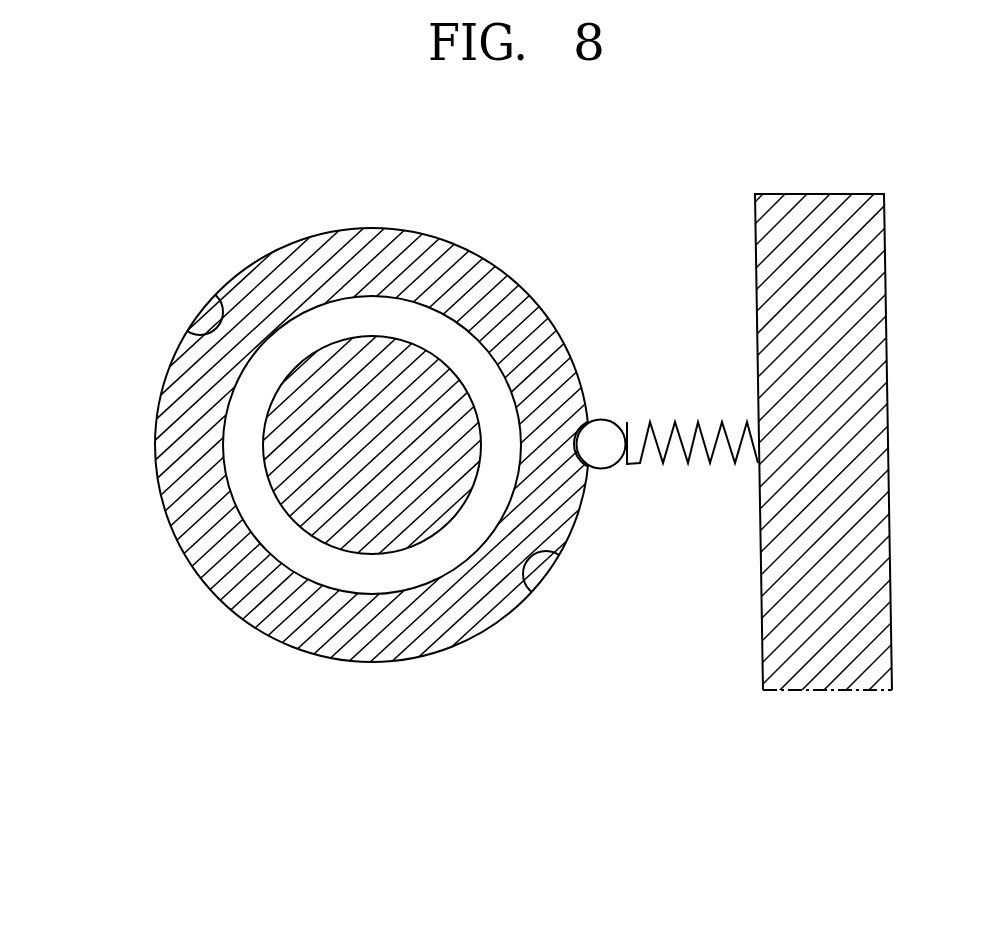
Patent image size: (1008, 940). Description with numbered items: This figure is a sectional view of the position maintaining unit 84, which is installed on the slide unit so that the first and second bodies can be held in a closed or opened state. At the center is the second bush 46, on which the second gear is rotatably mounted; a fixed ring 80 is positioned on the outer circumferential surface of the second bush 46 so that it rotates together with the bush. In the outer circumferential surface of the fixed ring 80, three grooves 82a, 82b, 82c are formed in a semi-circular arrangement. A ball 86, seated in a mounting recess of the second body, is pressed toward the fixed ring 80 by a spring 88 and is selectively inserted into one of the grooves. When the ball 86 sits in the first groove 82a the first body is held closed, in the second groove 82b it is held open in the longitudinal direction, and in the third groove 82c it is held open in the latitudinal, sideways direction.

The second bush 46 is at (374, 320).
The fixed ring 80 is at (382, 648).
The first groove 82a is at (603, 468).
The second groove 82b is at (197, 320).
The third groove 82c is at (548, 572).
The position maintaining unit 84 is at (162, 789).
The ball 86 is at (601, 444).
The spring 88 is at (678, 425).